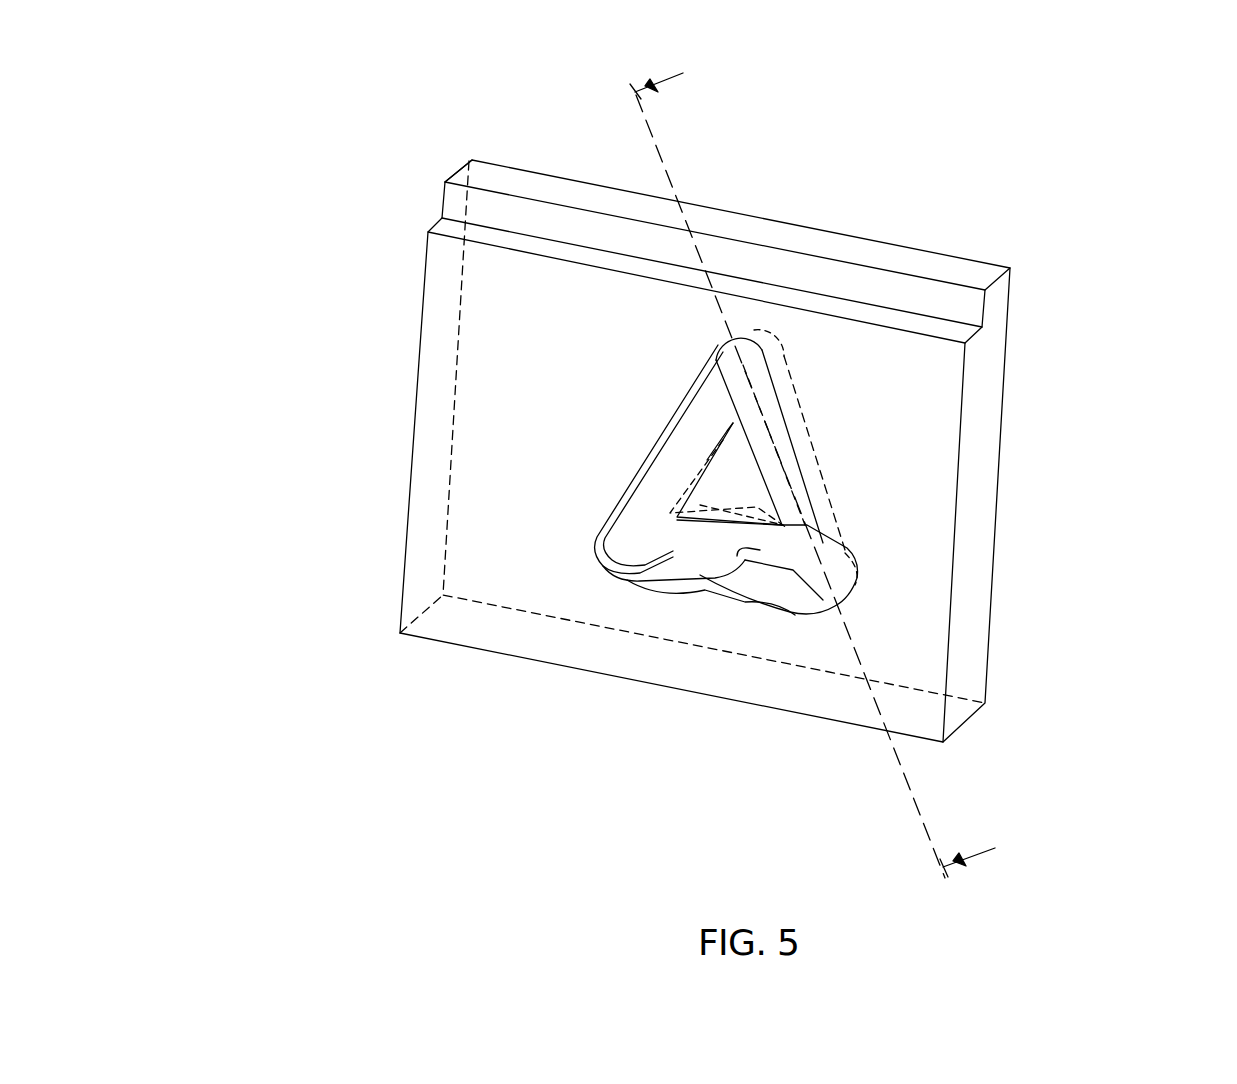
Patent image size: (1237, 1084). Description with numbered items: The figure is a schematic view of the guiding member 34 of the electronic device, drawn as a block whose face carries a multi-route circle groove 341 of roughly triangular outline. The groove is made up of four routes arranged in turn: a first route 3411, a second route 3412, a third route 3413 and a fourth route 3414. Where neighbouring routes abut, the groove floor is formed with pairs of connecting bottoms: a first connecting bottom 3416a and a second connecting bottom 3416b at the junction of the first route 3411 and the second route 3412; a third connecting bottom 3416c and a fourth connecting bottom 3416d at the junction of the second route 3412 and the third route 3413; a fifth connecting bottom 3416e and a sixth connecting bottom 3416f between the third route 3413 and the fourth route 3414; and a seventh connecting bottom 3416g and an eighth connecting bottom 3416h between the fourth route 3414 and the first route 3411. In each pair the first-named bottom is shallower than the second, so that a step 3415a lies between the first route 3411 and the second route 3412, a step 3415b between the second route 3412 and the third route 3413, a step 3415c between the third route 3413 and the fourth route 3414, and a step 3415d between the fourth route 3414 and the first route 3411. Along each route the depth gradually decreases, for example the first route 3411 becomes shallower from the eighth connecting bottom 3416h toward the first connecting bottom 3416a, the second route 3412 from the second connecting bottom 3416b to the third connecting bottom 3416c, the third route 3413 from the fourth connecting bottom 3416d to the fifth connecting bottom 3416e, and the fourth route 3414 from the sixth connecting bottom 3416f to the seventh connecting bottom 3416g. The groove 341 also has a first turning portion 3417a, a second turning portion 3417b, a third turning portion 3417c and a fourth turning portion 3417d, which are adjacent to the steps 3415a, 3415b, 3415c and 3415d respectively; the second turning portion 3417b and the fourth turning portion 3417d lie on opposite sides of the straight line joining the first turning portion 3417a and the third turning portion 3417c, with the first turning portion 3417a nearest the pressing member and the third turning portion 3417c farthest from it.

The guiding member 34 is at (224, 186).
The multi-route circle groove 341 is at (685, 420).
The first route 3411 is at (762, 433).
The second route 3412 is at (793, 570).
The third route 3413 is at (750, 550).
The fourth route 3414 is at (662, 455).
The step 3415a is at (952, 656).
The step 3415b is at (735, 684).
The step 3415c is at (501, 637).
The step 3415d is at (910, 324).
The first connecting bottom 3416a is at (807, 525).
The second connecting bottom 3416b is at (823, 610).
The third connecting bottom 3416c is at (757, 560).
The fourth connecting bottom 3416d is at (717, 540).
The fifth connecting bottom 3416e is at (690, 548).
The sixth connecting bottom 3416f is at (630, 537).
The seventh connecting bottom 3416g is at (707, 385).
The eighth connecting bottom 3416h is at (735, 362).
The first turning portion 3417a is at (723, 340).
The second turning portion 3417b is at (843, 543).
The third turning portion 3417c is at (727, 545).
The fourth turning portion 3417d is at (672, 552).